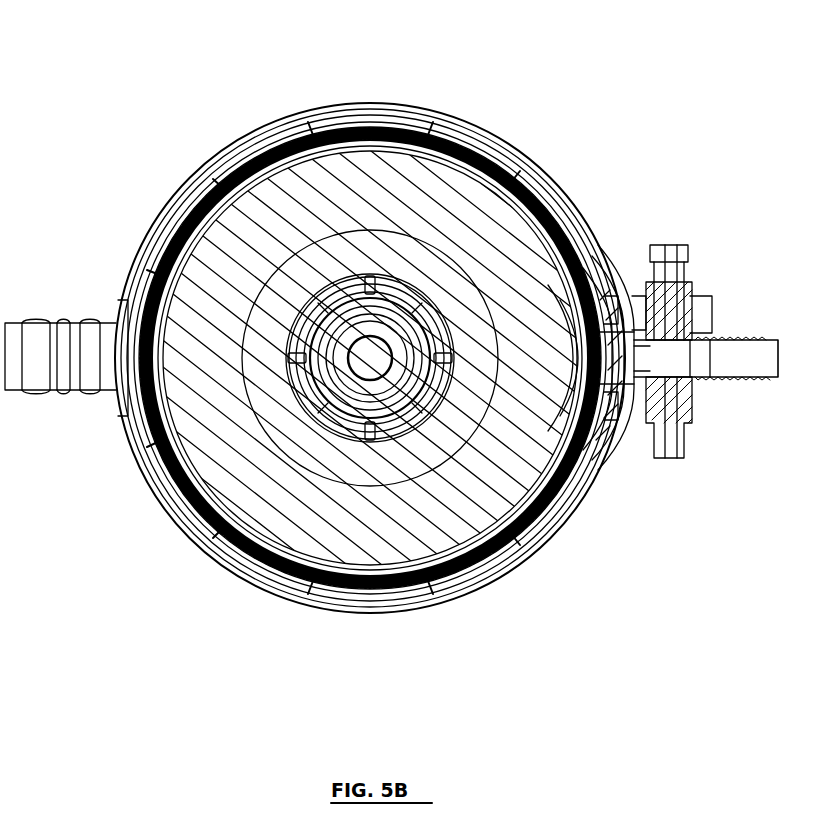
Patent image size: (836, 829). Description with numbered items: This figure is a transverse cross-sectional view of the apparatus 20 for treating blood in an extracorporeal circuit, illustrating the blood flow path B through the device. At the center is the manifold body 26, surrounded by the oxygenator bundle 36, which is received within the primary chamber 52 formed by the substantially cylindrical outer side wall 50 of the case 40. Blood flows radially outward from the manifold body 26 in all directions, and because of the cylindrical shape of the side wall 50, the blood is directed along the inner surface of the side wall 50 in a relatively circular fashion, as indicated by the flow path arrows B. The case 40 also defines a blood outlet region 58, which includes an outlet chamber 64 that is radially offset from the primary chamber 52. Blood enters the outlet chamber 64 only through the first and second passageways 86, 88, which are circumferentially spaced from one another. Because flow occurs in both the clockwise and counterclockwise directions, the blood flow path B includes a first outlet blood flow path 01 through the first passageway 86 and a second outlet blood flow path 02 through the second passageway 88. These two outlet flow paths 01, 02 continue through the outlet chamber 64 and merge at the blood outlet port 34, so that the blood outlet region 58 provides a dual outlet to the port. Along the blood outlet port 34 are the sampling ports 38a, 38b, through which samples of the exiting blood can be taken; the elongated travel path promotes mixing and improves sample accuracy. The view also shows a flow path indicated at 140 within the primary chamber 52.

The apparatus 20 is at (116, 140).
The outer side wall 50 is at (360, 133).
The manifold body 26 is at (333, 282).
The oxygenator bundle 36 is at (409, 165).
The primary chamber 52 is at (162, 290).
The flow path 140 is at (263, 403).
The case 40 is at (186, 523).
The first passageway 86 is at (588, 262).
The first outlet blood flow path 01 is at (629, 262).
The blood outlet region 58 is at (653, 243).
The sampling port 38b is at (690, 262).
The blood outlet port 34 is at (741, 330).
The outlet chamber 64 is at (607, 417).
The second outlet blood flow path 02 is at (585, 432).
The second passageway 88 is at (588, 490).
The sampling port 38a is at (690, 445).
The blood flow path arrows B is at (290, 322).